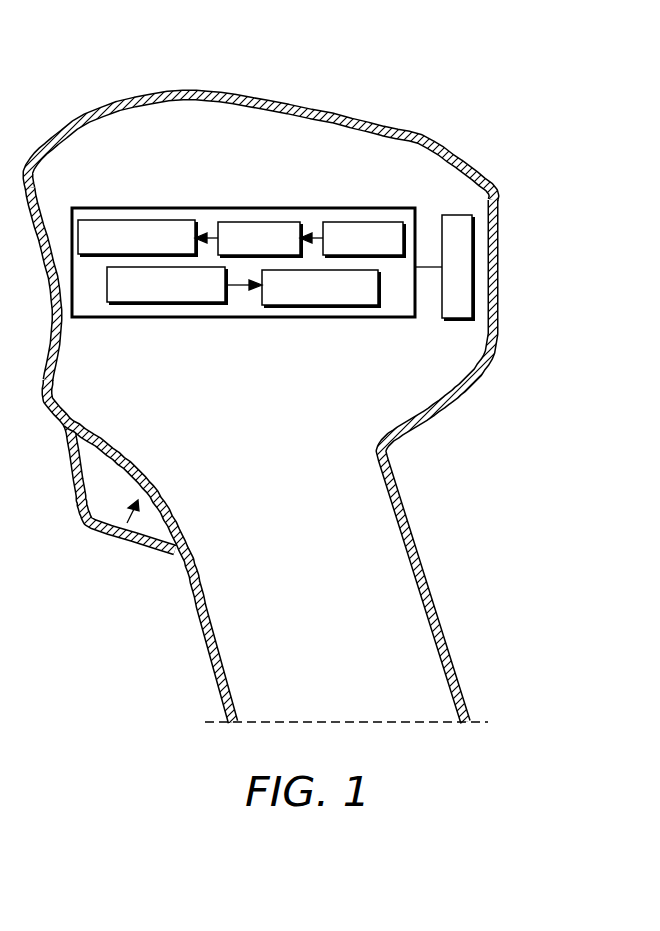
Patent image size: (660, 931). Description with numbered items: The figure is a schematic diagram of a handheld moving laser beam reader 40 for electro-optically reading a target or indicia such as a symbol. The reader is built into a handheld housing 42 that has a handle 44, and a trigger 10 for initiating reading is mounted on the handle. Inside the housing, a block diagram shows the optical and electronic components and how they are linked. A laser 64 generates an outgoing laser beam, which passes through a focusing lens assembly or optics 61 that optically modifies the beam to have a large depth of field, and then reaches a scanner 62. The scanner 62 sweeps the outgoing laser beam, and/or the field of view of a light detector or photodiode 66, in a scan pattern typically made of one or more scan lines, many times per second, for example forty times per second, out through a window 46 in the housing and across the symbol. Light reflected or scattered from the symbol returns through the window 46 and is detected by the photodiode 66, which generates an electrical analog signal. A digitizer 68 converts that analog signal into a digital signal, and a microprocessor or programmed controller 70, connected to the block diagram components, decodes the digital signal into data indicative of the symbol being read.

The trigger 10 is at (110, 560).
The moving laser beam reader 40 is at (515, 87).
The handheld housing 42 is at (500, 262).
The handle 44 is at (412, 538).
The window 46 is at (50, 289).
The focusing lens assembly or optics 61 is at (259, 221).
The scanner 62 is at (137, 219).
The laser 64 is at (364, 221).
The light detector or photodiode 66 is at (165, 303).
The digitizer 68 is at (318, 306).
The microprocessor or programmed controller 70 is at (455, 214).